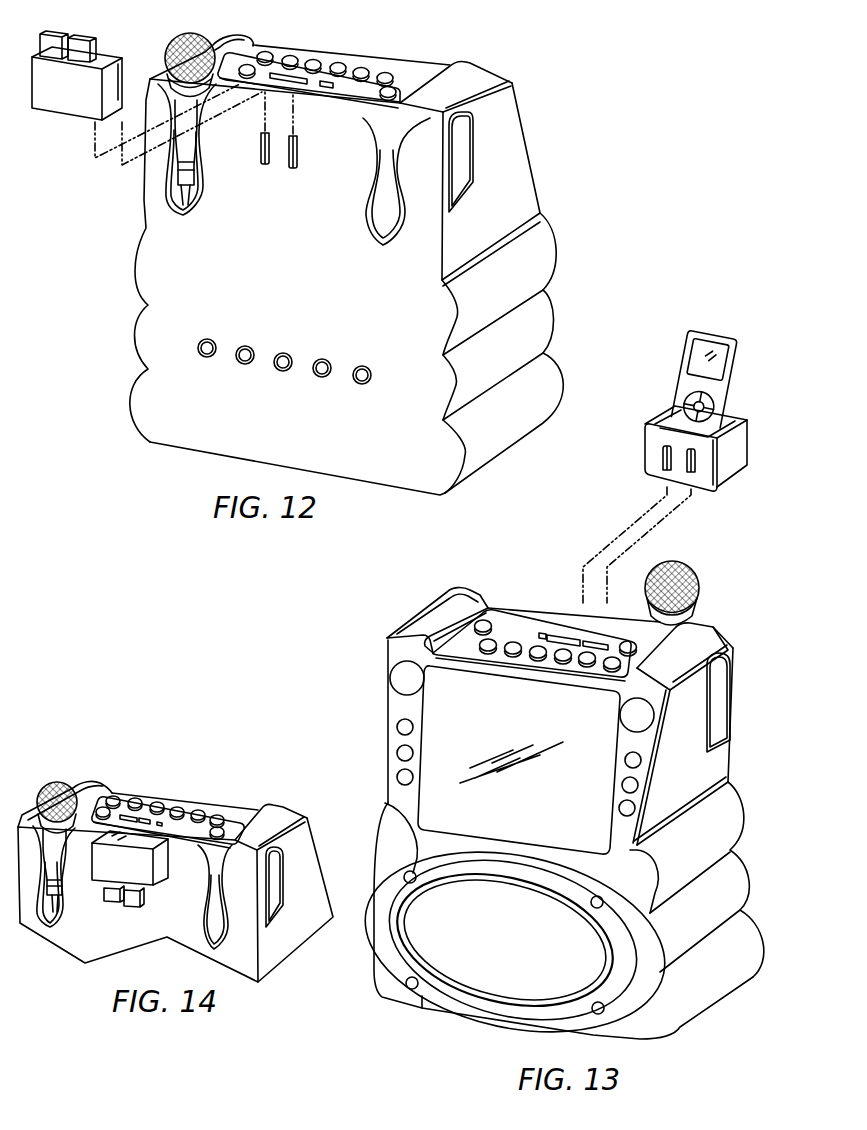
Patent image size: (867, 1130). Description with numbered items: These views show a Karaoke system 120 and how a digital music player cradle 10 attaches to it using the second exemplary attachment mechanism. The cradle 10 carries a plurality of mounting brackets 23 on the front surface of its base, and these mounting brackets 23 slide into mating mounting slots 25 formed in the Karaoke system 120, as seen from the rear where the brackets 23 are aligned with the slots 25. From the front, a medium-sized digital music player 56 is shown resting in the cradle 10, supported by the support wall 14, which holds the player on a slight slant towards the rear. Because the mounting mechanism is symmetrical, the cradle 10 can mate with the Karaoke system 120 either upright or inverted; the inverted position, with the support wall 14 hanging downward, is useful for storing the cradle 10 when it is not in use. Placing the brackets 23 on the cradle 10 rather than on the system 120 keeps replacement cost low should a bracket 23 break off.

In FIG. 12, the digital music player cradle 10 is at (147, 88).
In FIG. 13, the digital music player cradle 10 is at (664, 466).
In FIG. 14, the digital music player cradle 10 is at (149, 858).
In FIG. 12, the support wall 14 is at (78, 42).
In FIG. 14, the support wall 14 is at (132, 908).
In FIG. 12, the mounting brackets 23 is at (125, 78).
In FIG. 13, the mounting brackets 23 is at (662, 460).
In FIG. 12, the mating mounting slots 25 is at (260, 155).
In FIG. 13, the medium-sized digital music player 56 is at (676, 363).
In FIG. 12, the Karaoke system 120 is at (365, 264).
In FIG. 13, the Karaoke system 120 is at (384, 707).
In FIG. 14, the Karaoke system 120 is at (276, 961).